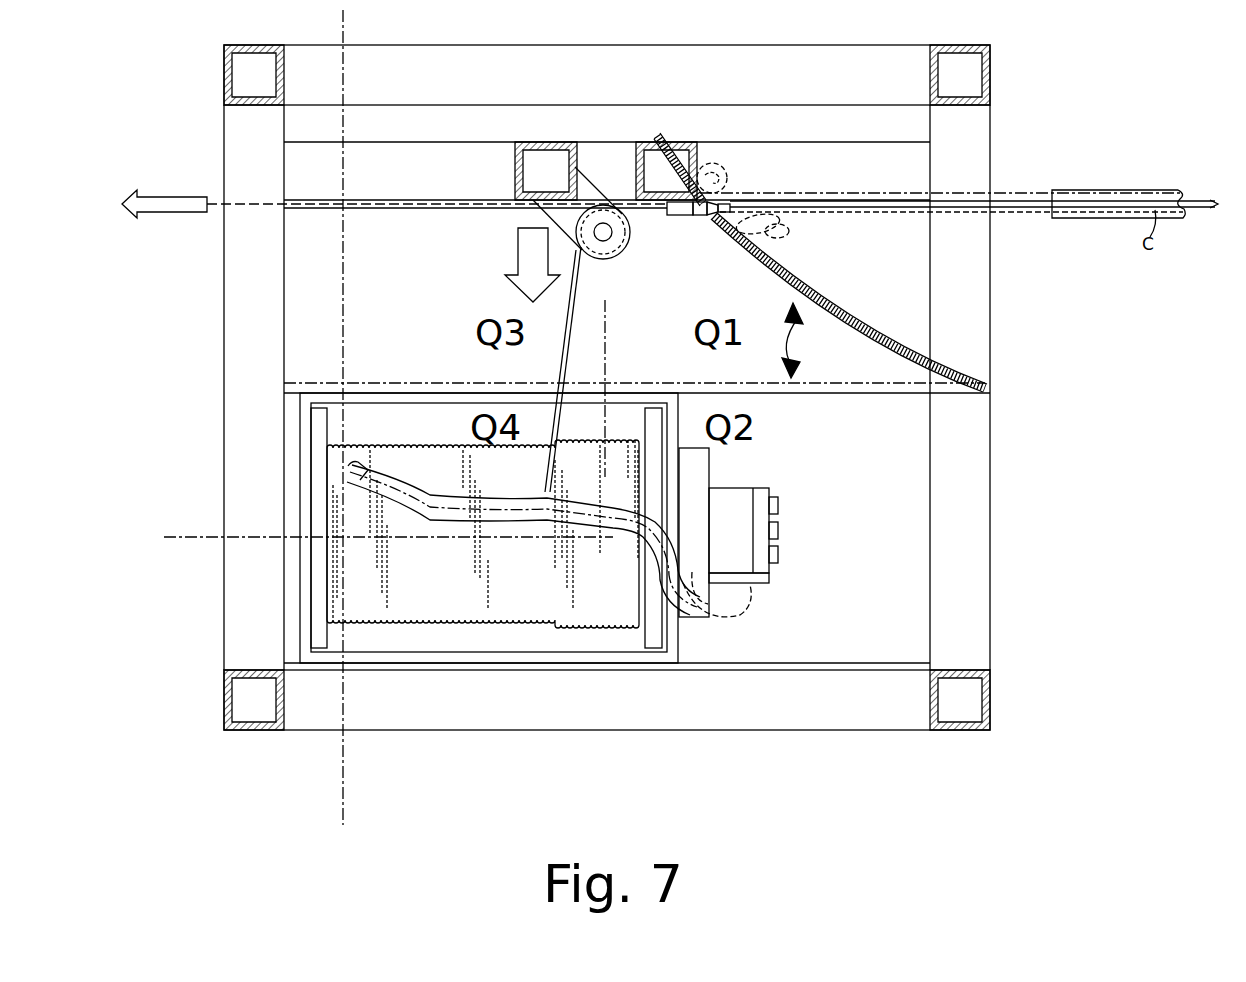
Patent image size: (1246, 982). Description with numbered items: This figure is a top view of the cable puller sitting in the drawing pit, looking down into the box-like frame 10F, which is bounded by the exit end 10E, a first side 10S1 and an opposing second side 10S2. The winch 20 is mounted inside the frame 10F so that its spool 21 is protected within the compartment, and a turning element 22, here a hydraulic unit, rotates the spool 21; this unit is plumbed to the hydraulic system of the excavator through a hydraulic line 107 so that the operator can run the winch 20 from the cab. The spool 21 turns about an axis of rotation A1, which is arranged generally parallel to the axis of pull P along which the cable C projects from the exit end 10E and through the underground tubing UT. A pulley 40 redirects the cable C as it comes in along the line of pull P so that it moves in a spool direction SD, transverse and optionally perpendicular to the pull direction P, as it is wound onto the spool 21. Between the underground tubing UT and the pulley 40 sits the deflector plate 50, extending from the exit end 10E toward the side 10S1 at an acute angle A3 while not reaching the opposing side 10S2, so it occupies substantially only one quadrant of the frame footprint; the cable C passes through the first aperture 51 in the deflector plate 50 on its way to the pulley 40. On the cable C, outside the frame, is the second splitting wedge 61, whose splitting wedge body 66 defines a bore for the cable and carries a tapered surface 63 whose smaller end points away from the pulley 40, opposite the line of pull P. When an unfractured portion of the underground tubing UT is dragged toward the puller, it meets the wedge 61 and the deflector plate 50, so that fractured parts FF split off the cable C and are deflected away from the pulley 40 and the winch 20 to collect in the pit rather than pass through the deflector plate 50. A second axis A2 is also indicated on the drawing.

The side of the frame 10S1 is at (827, 45).
The opposing side of the frame 10S2 is at (825, 730).
The frame 10F is at (222, 485).
The exit end of the frame 10E is at (990, 477).
The winch 20 is at (383, 640).
The spool 21 is at (322, 570).
The turning element 22 is at (732, 553).
The pulley 40 is at (597, 195).
The deflector plate 50 is at (852, 292).
The first aperture 51 is at (723, 216).
The second splitting wedge 61 is at (698, 214).
The tapered surface 63 is at (653, 244).
The splitting wedge body 66 is at (677, 212).
The hydraulic line 107 is at (722, 625).
The axis of pull P is at (171, 203).
The spool direction SD is at (533, 253).
The cable C is at (568, 296).
The fractured parts FF is at (718, 168).
The underground tubing UT is at (1113, 190).
The axis of rotation A1 is at (185, 540).
The second axis A2 is at (345, 790).
The angle A3 is at (802, 340).